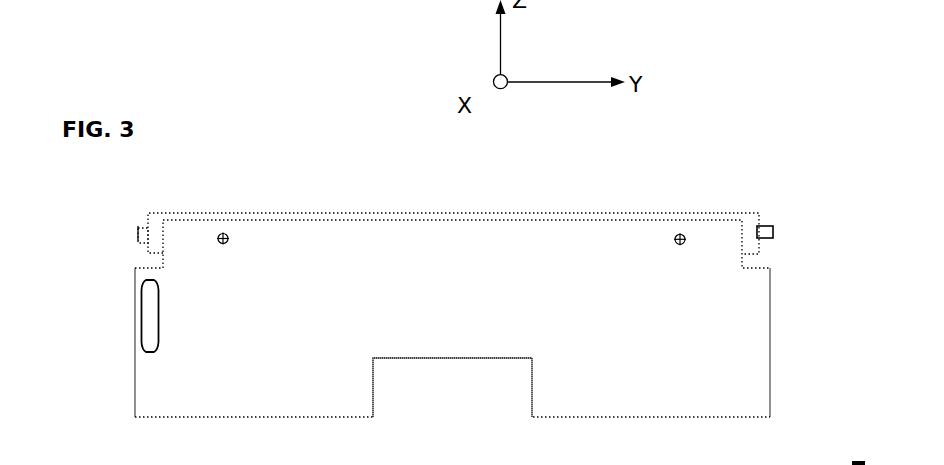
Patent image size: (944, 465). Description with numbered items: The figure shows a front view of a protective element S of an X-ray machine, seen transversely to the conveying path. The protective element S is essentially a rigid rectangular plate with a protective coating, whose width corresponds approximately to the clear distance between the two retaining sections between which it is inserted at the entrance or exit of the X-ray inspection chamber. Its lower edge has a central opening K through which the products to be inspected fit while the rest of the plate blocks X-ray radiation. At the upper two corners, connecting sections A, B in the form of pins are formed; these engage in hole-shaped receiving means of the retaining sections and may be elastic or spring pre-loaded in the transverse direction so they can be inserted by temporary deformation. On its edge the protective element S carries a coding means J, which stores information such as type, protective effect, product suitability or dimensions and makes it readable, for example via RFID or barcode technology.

The connecting section A is at (150, 233).
The connecting section B is at (785, 229).
The coding means J is at (148, 314).
The protective element S is at (452, 315).
The central opening K is at (452, 387).